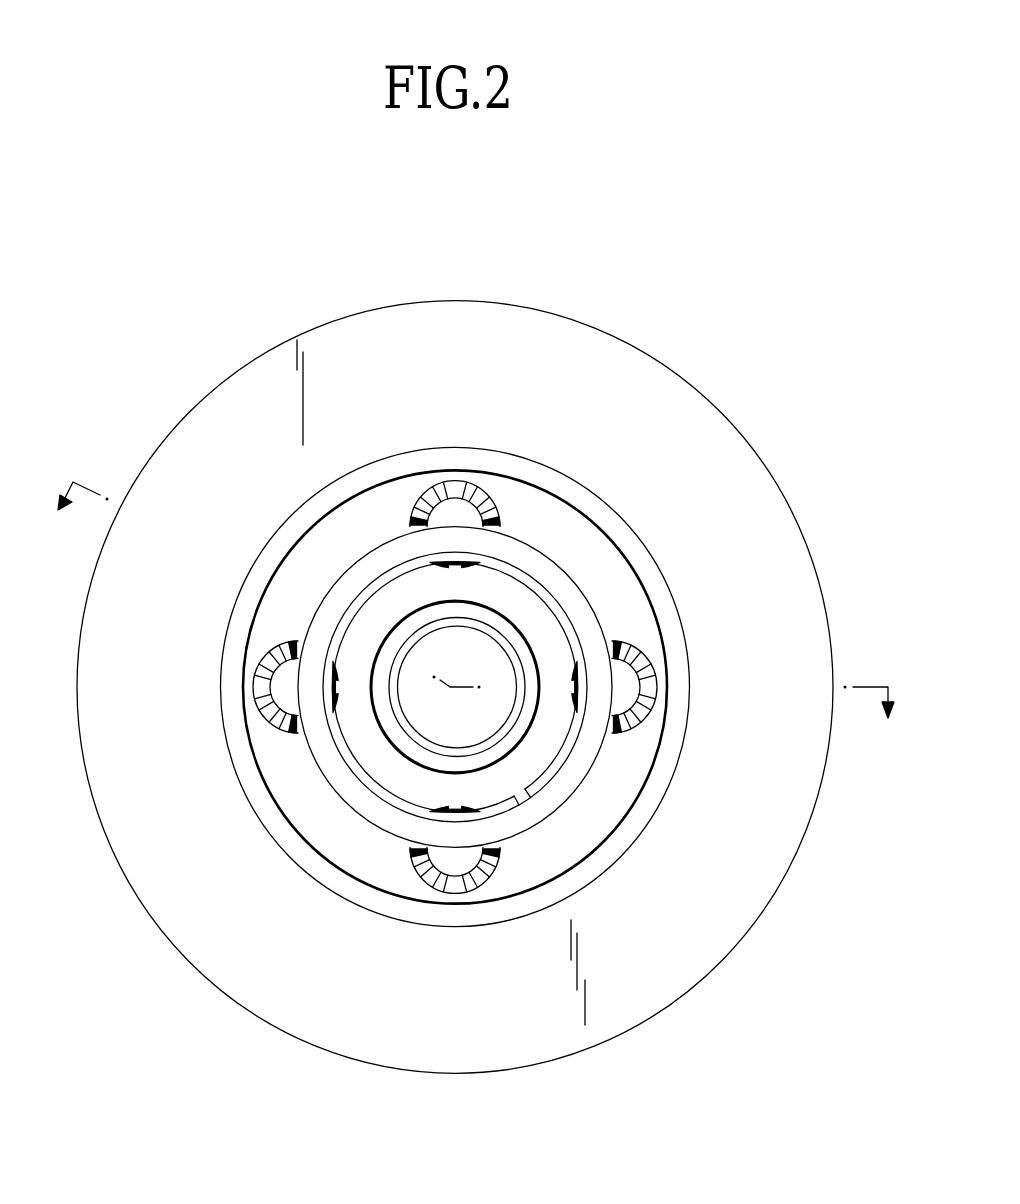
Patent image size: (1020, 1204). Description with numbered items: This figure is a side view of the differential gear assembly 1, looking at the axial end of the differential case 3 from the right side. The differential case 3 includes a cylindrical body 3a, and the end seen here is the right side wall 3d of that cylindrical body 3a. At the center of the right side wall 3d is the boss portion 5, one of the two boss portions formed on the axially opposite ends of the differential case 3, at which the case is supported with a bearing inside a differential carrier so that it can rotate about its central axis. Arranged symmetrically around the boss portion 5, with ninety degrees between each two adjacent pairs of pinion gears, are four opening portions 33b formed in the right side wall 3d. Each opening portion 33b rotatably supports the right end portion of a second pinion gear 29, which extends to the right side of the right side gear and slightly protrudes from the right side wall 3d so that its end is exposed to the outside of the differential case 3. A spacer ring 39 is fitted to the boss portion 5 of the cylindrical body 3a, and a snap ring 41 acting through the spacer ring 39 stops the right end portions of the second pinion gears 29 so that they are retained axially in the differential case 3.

The differential gear assembly 1 is at (471, 682).
The differential case 3 is at (682, 373).
The cylindrical body 3a is at (667, 600).
The right side wall 3d is at (630, 795).
The boss portion 5 is at (505, 790).
The second pinion gear 29 is at (442, 503).
The opening portion 33b is at (476, 495).
The spacer ring 39 is at (572, 590).
The snap ring 41 is at (535, 580).